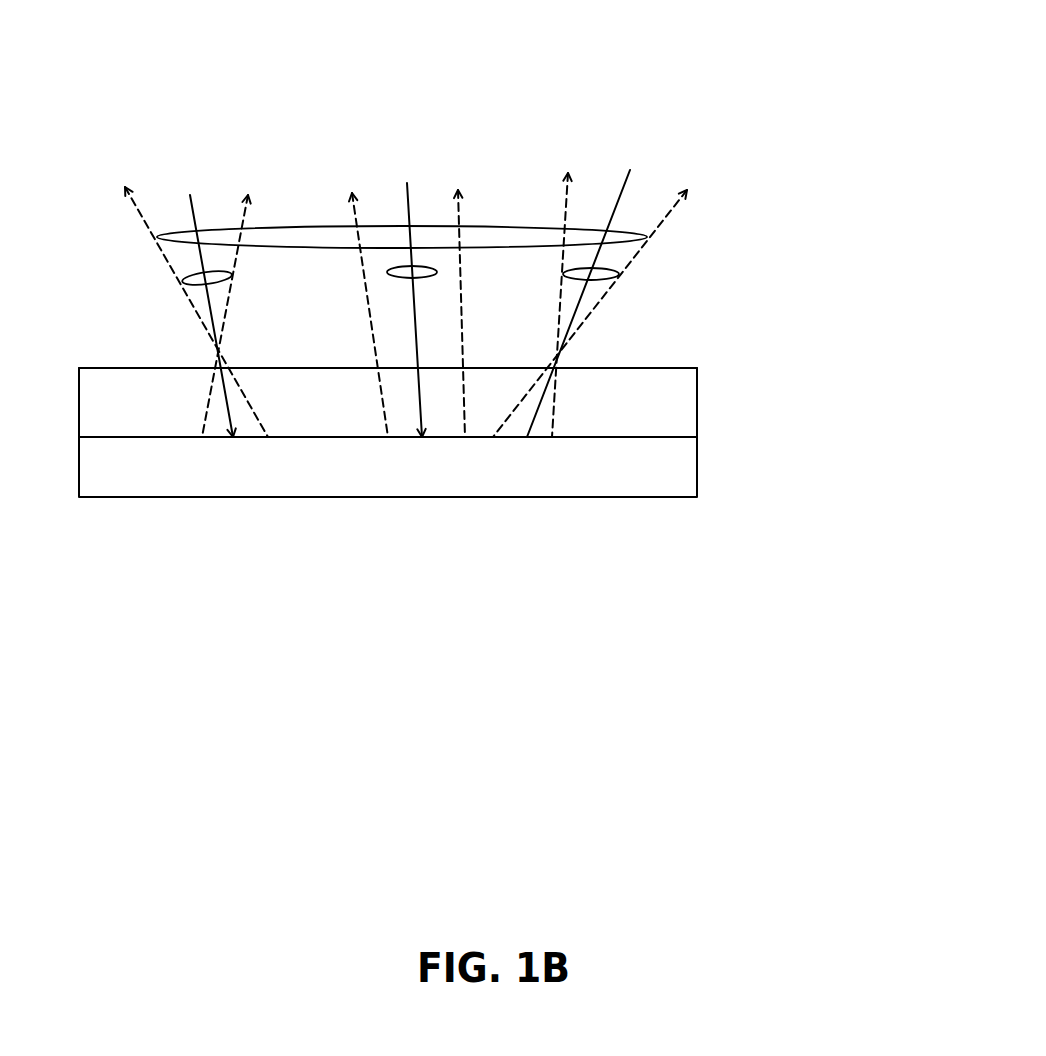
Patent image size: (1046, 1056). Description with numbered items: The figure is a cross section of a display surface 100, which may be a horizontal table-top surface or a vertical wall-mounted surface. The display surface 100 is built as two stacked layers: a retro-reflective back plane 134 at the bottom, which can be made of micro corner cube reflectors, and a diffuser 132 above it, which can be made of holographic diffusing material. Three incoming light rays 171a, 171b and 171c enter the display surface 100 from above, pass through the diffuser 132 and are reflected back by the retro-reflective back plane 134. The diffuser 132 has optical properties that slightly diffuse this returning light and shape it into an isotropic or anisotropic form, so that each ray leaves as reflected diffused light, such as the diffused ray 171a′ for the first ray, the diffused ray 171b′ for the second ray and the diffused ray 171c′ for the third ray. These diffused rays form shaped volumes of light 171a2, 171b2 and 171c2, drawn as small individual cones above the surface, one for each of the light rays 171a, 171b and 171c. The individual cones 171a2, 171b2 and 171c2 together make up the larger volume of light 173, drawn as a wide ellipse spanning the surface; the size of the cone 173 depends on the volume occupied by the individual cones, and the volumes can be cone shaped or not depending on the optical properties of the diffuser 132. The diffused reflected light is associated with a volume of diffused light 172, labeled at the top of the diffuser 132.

The display surface 100 is at (447, 91).
The light ray 171a is at (199, 300).
The reflected diffused light 171a′ is at (177, 300).
The shaped volume of light 171a2 is at (184, 281).
The light ray 171b is at (405, 299).
The reflected diffused light 171b′ is at (347, 299).
The shaped volume of light 171b2 is at (388, 273).
The light ray 171c is at (595, 290).
The reflected diffused light 171c′ is at (566, 290).
The shaped volume of light 171c2 is at (563, 274).
The volume of light 173 is at (647, 237).
The volume of diffused light 172 is at (553, 368).
The diffuser 132 is at (697, 389).
The retro-reflective back plane 134 is at (697, 468).